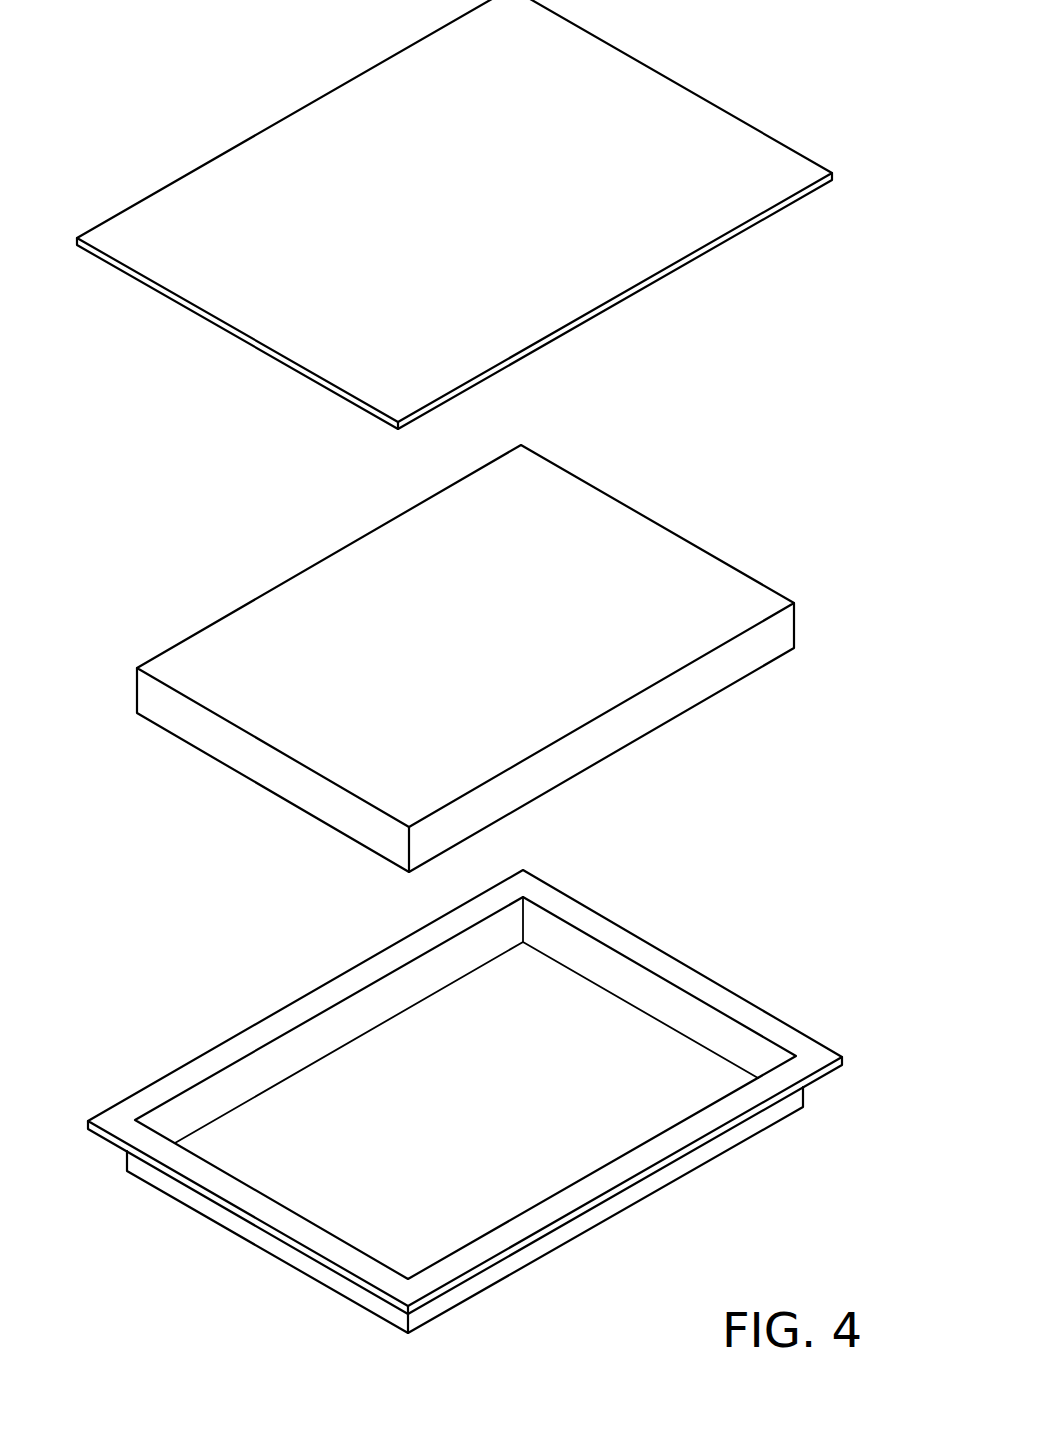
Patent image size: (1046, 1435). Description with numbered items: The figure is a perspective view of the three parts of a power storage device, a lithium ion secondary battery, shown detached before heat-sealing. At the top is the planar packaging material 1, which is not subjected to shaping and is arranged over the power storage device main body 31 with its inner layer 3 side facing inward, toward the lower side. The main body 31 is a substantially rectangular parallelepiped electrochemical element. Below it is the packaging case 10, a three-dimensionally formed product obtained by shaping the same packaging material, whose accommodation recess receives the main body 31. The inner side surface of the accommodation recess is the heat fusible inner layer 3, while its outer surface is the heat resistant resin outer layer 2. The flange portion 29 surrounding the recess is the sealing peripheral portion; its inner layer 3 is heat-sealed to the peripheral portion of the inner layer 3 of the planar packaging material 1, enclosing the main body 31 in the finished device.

The packaging material 1 is at (654, 97).
The power storage device main body 31 is at (633, 537).
The packaging case 10 is at (465, 1087).
The flange portion 29 is at (682, 970).
The outer layer 2 is at (596, 1212).
The inner layer 3 is at (576, 1028).